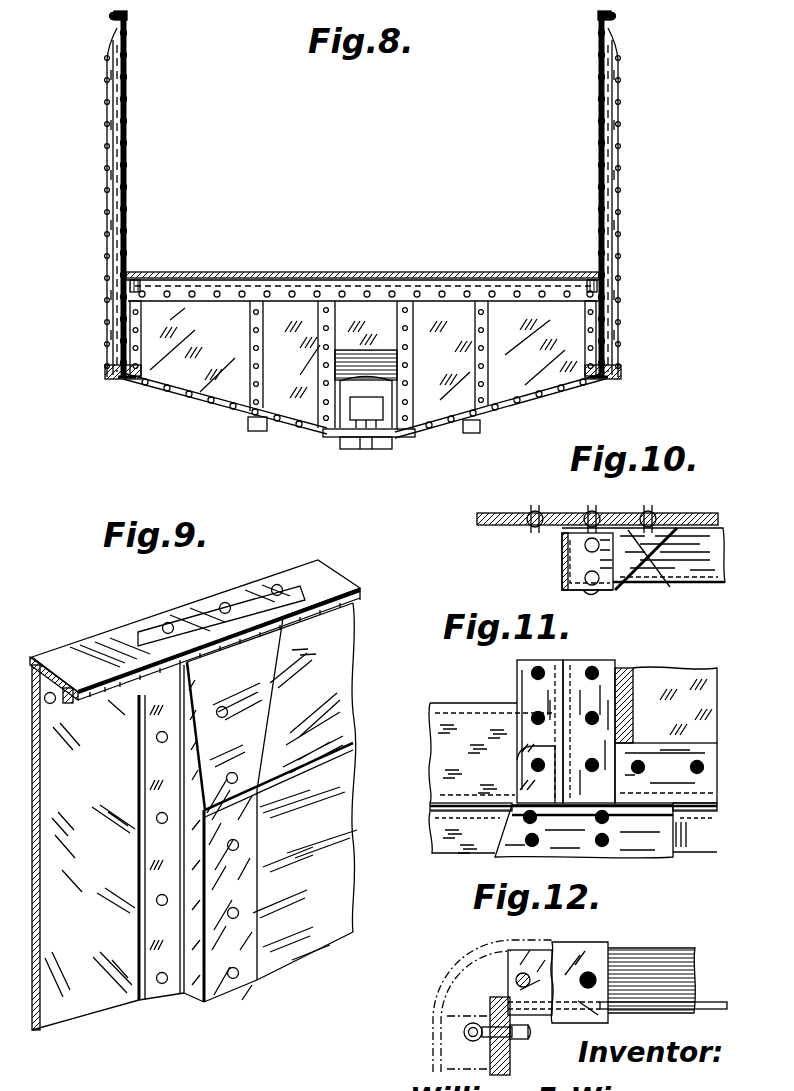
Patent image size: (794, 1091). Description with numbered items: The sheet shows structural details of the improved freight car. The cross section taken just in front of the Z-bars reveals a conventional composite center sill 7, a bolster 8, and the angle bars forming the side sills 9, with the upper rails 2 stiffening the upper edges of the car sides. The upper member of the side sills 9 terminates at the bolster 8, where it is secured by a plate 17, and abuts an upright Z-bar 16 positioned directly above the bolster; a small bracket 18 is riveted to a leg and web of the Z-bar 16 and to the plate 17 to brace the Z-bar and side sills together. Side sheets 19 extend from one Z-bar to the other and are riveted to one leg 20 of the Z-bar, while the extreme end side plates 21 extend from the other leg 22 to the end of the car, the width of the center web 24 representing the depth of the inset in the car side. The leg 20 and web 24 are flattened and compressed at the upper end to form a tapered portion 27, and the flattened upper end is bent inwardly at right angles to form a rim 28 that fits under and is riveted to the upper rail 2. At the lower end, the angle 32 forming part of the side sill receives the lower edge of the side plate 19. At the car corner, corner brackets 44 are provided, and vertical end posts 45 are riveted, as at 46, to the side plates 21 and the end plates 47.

In FIG. 8, the upper rail 2 is at (111, 15).
In FIG. 9, the upper rail 2 is at (56, 683).
In FIG. 10, the upper rail 2 is at (697, 514).
In FIG. 12, the upper rail 2 is at (668, 962).
In FIG. 8, the center sill 7 is at (337, 434).
In FIG. 8, the bolster 8 is at (437, 385).
In FIG. 8, the side sills 9 is at (125, 381).
In FIG. 11, the side sills 9 is at (690, 802).
In FIG. 8, the Z-bar 16 is at (108, 213).
In FIG. 9, the Z-bar 16 is at (238, 986).
In FIG. 10, the Z-bar 16 is at (563, 583).
In FIG. 11, the Z-bar 16 is at (560, 690).
In FIG. 8, the plate 17 is at (232, 418).
In FIG. 11, the plate 17 is at (623, 833).
In FIG. 8, the bracket 18 is at (120, 373).
In FIG. 11, the bracket 18 is at (525, 773).
In FIG. 8, the side sheets 19 is at (105, 113).
In FIG. 9, the side sheets 19 is at (340, 860).
In FIG. 10, the side sheets 19 is at (708, 588).
In FIG. 11, the side sheets 19 is at (686, 690).
In FIG. 9, the leg 20 is at (240, 864).
In FIG. 10, the leg 20 is at (607, 592).
In FIG. 8, the end side plates 21 is at (128, 185).
In FIG. 9, the end side plates 21 is at (85, 847).
In FIG. 10, the end side plates 21 is at (500, 526).
In FIG. 12, the end side plates 21 is at (711, 1003).
In FIG. 8, the leg 22 is at (120, 262).
In FIG. 9, the leg 22 is at (156, 887).
In FIG. 10, the leg 22 is at (528, 527).
In FIG. 11, the leg 22 is at (530, 710).
In FIG. 8, the center web 24 is at (114, 160).
In FIG. 9, the center web 24 is at (202, 976).
In FIG. 10, the center web 24 is at (568, 548).
In FIG. 11, the center web 24 is at (575, 666).
In FIG. 9, the tapered portion 27 is at (262, 645).
In FIG. 10, the tapered portion 27 is at (657, 580).
In FIG. 9, the rim 28 is at (288, 590).
In FIG. 11, the angle 32 is at (667, 767).
In FIG. 12, the corner brackets 44 is at (600, 955).
In FIG. 12, the end posts 45 is at (490, 1003).
In FIG. 12, the rivets 46 is at (505, 1034).
In FIG. 12, the end plates 47 is at (497, 1054).